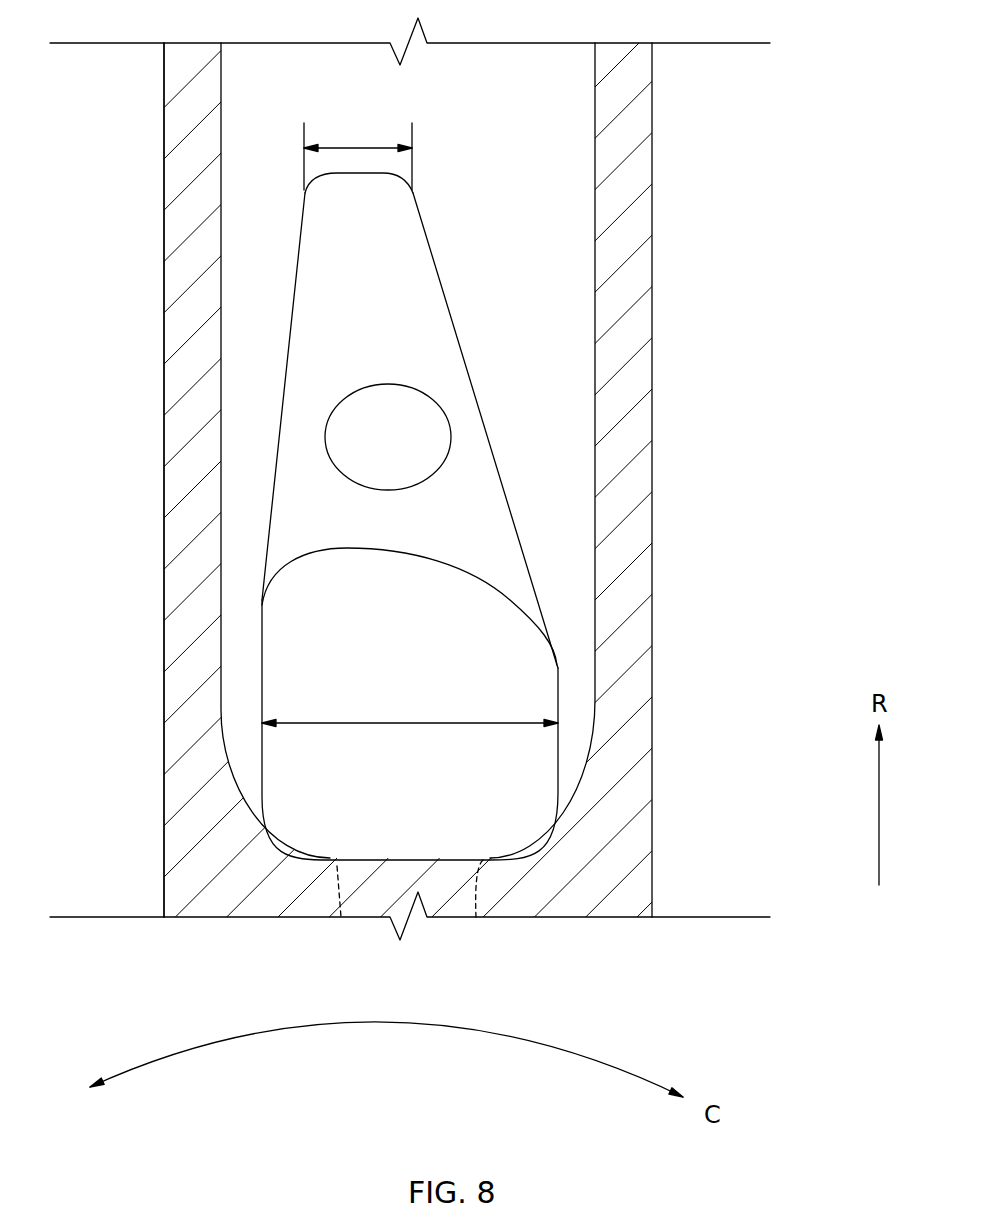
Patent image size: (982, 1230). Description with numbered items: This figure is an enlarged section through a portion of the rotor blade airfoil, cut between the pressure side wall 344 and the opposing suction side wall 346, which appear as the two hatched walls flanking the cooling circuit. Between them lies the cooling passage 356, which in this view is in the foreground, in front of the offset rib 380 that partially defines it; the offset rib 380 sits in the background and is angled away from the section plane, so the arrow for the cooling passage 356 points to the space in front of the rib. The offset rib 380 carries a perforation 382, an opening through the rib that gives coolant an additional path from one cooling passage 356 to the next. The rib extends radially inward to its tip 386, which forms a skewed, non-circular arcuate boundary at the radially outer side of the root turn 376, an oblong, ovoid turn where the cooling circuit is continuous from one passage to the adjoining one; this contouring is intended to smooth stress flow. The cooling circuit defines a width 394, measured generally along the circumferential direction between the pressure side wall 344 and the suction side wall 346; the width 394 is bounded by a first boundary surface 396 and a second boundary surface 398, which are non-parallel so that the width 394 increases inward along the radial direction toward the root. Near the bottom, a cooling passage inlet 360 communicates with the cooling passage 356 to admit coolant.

The pressure side wall 344 is at (655, 616).
The suction side wall 346 is at (163, 483).
The cooling passage 356 is at (487, 535).
The cooling passage inlet 360 is at (498, 920).
The root turn 376 is at (507, 668).
The offset rib 380 is at (301, 420).
The perforation 382 is at (449, 432).
The tip 386 is at (452, 570).
The width 394 is at (410, 419).
The first boundary surface 396 is at (283, 337).
The second boundary surface 398 is at (450, 320).